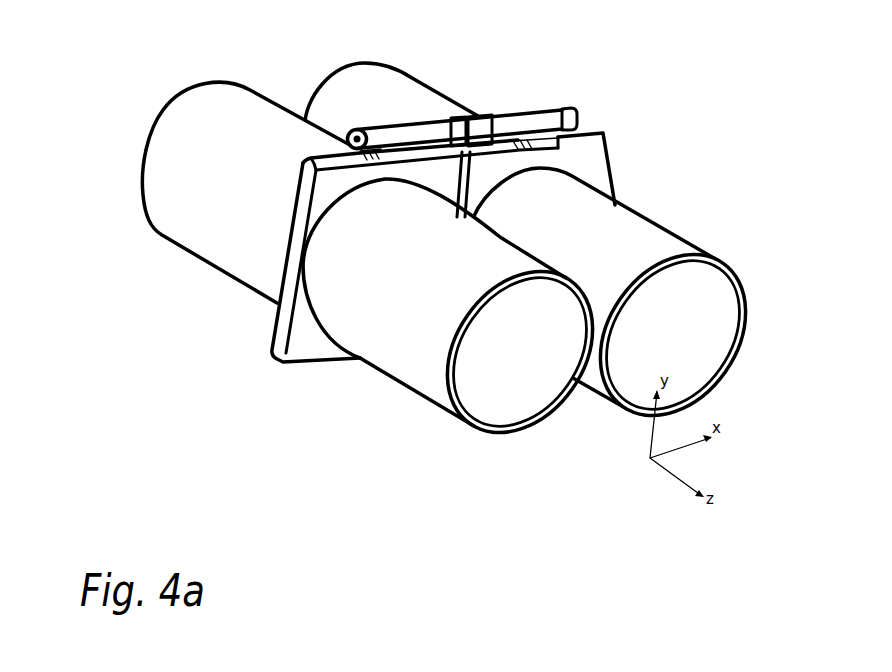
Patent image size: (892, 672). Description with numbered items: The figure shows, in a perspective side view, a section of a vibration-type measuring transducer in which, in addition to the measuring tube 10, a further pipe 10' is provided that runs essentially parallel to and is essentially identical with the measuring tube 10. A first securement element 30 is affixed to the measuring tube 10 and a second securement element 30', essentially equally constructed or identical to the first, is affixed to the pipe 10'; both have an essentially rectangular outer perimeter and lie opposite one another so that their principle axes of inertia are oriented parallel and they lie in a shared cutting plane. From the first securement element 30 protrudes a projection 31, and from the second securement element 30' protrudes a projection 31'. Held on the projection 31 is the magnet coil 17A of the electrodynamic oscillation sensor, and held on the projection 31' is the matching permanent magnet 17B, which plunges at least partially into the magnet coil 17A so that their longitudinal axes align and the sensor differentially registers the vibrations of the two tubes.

The measuring tube 10 is at (382, 271).
The pipe 10' is at (540, 253).
The first securement element 30 is at (351, 254).
The second securement element 30' is at (594, 140).
The projection 31 is at (237, 220).
The projection 31' is at (564, 75).
The magnet coil 17A is at (381, 123).
The permanent magnet 17B is at (480, 115).